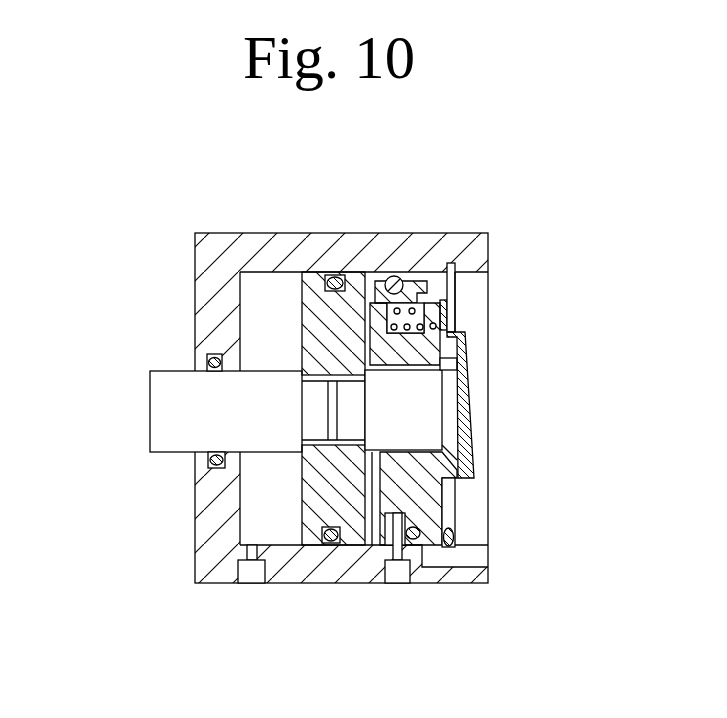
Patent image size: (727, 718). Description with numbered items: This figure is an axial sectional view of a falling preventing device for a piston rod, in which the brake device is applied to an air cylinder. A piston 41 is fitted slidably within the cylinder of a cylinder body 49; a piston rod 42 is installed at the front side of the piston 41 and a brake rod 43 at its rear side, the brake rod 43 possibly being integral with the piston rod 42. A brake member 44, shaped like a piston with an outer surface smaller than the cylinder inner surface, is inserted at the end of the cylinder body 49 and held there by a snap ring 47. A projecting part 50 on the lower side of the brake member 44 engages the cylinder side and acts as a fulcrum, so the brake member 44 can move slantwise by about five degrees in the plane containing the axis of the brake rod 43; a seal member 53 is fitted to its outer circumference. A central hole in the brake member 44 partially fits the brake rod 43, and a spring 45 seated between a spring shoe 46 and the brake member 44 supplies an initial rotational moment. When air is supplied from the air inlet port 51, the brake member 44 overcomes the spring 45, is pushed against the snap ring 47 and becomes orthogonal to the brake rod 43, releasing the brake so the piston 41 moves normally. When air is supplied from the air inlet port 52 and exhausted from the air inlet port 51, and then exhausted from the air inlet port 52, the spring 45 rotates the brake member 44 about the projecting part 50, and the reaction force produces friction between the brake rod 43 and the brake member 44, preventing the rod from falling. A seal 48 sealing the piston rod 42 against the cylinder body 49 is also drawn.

The piston 41 is at (312, 345).
The piston rod 42 is at (170, 380).
The brake rod 43 is at (428, 403).
The brake member 44 is at (449, 345).
The spring 45 is at (440, 305).
The spring shoe 46 is at (457, 315).
The snap ring 47 is at (452, 265).
The seal 48 is at (207, 470).
The cylinder body 49 is at (212, 252).
The projecting part 50 is at (443, 560).
The air inlet port 51 is at (395, 573).
The air inlet port 52 is at (248, 572).
The seal member 53 is at (393, 276).